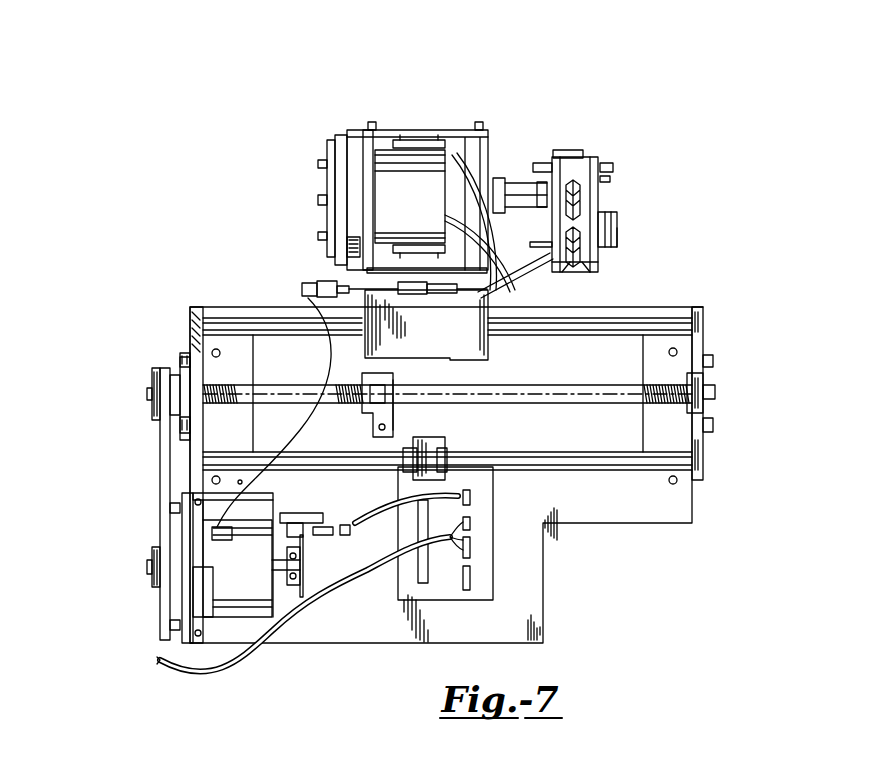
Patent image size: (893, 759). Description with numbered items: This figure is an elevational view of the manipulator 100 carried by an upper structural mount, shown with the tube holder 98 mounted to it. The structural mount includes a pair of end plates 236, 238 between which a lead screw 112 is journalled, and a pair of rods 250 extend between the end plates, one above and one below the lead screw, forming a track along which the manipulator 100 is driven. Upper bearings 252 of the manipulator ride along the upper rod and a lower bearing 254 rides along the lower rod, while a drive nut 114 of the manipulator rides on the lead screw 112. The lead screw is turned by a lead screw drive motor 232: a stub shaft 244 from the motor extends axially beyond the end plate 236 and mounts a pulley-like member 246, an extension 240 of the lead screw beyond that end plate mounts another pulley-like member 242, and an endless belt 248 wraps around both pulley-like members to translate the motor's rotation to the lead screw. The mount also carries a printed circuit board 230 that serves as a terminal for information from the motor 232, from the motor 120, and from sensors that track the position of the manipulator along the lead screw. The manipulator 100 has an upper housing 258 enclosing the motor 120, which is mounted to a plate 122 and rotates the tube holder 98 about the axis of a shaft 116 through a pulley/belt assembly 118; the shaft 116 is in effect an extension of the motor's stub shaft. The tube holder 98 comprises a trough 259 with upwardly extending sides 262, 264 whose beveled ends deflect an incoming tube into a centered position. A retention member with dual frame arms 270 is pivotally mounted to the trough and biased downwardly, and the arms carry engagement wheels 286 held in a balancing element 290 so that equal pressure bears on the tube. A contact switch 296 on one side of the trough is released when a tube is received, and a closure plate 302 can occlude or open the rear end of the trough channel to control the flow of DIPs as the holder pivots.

The tube holder 98 is at (587, 208).
The manipulator 100 is at (216, 301).
The lead screw 112 is at (520, 383).
The drive nut 114 is at (412, 405).
The shaft 116 is at (517, 190).
The pulley/belt assembly 118 is at (322, 197).
The motor 120 is at (384, 172).
The plate 122 is at (366, 183).
The printed circuit board 230 is at (483, 517).
The lead screw drive motor 232 is at (247, 617).
The end plate 236 is at (191, 333).
The end plate 238 is at (703, 330).
The extension of the lead screw 240 is at (152, 395).
The pulley-like member 242 is at (154, 410).
The stub shaft 244 is at (152, 568).
The pulley-like member 246 is at (156, 582).
The endless belt 248 is at (160, 522).
The rods 250 is at (258, 325).
The upper bearings 252 is at (467, 315).
The lower bearing 254 is at (435, 455).
The upper housing 258 is at (455, 128).
The trough 259 is at (580, 266).
The side 262 is at (545, 168).
The side 264 is at (600, 200).
The frame arms 270 is at (600, 233).
The engagement wheel 286 is at (553, 256).
The balancing element 290 is at (600, 217).
The contact switch 296 is at (620, 243).
The closure plate 302 is at (573, 150).